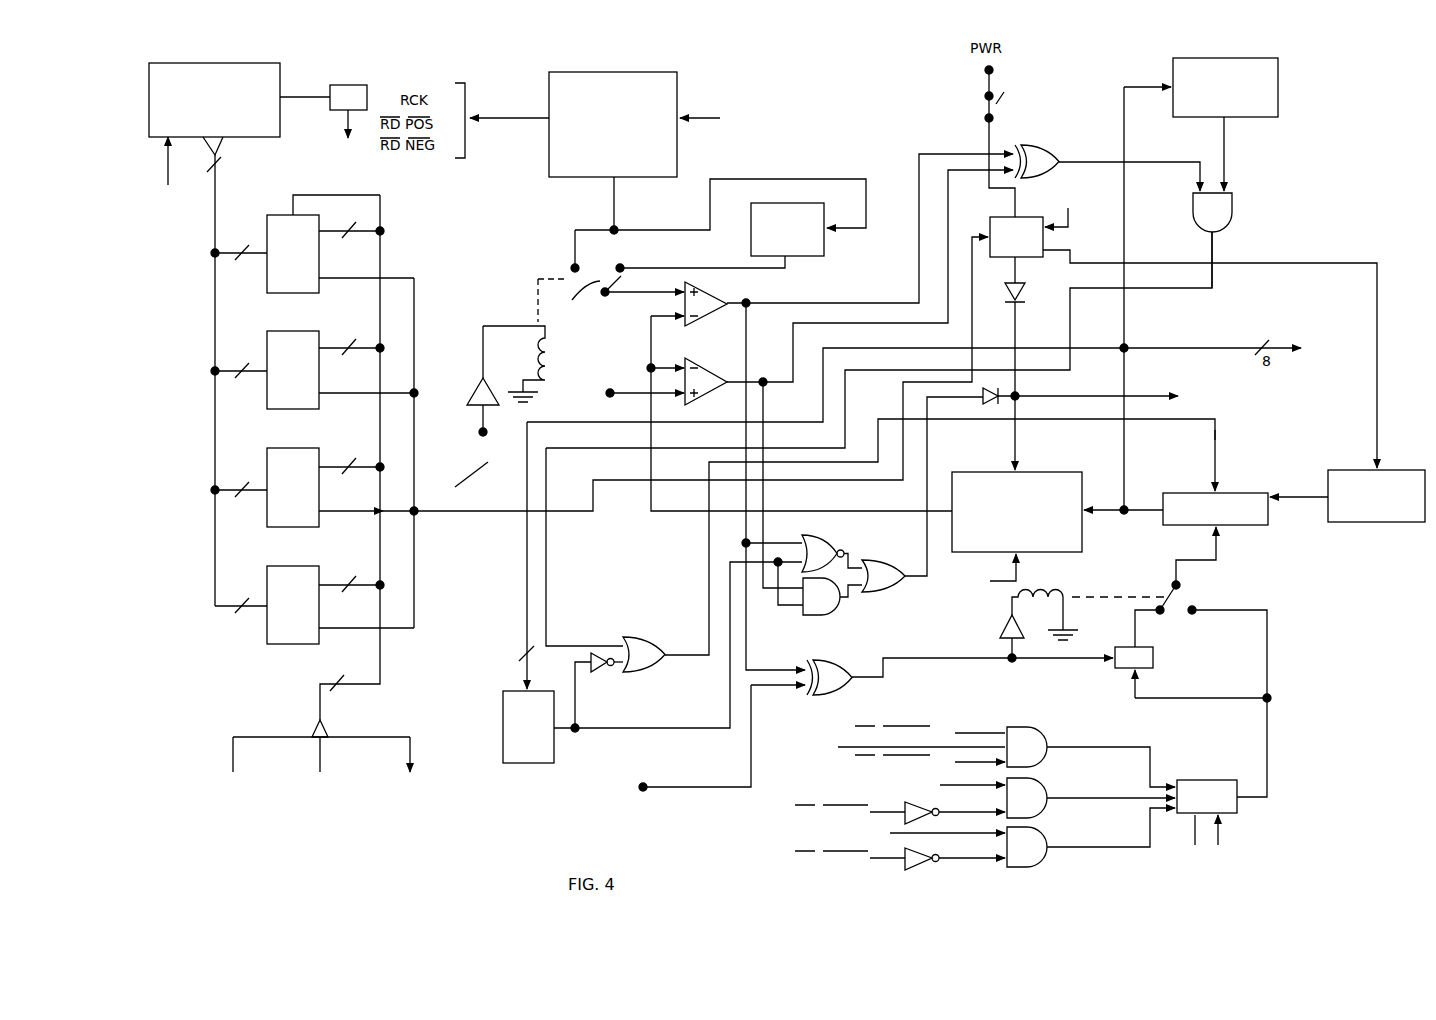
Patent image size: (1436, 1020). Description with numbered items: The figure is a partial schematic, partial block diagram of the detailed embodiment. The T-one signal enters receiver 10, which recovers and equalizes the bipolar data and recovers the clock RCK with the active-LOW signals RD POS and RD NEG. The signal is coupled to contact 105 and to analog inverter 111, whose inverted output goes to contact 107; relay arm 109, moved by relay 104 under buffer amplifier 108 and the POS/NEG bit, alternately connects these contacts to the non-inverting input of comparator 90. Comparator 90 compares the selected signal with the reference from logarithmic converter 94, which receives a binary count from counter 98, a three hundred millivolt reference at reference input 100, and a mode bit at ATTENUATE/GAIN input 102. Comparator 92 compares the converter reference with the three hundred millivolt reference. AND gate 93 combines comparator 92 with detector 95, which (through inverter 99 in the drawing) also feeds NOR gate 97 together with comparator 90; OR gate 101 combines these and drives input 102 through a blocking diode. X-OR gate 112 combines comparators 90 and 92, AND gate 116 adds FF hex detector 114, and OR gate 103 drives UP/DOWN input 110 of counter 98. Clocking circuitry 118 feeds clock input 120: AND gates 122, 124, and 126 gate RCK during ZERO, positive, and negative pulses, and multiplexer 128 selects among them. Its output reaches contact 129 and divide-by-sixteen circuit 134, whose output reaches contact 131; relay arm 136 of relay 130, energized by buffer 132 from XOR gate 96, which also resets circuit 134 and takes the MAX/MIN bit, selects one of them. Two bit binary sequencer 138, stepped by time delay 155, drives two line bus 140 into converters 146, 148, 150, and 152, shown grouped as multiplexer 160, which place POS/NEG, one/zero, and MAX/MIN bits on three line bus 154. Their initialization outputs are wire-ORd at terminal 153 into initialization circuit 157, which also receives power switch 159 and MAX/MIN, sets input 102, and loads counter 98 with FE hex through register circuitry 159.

The receiver 10 is at (549, 97).
The comparator 90 is at (713, 289).
The comparator 92 is at (710, 369).
The AND gate 93 is at (838, 613).
The logarithmic digital-to-analog converter 94 is at (1085, 478).
The 00 hex detector 95 is at (481, 714).
The XOR gate 96 is at (852, 688).
The NOR gate 97 is at (835, 536).
The counter 98 is at (1186, 528).
The inverter 99 is at (600, 668).
The reference input 100 is at (1018, 578).
The OR gate 101 is at (903, 582).
The ATTENUATE/GAIN input 102 is at (1012, 445).
The OR gate 103 is at (658, 665).
The relay 104 is at (531, 340).
The contact 105 is at (574, 266).
The contact 107 is at (623, 265).
The buffer amplifier 108 is at (478, 386).
The relay arm 109 is at (587, 298).
The UP/DOWN input 110 is at (1212, 468).
The analog inverter 111 is at (824, 256).
The X-OR gate 112 is at (1058, 152).
The FF hex detector 114 is at (1278, 117).
The AND gate 116 is at (1240, 203).
The clocking circuitry 118 is at (1123, 779).
The clock input 120 is at (1222, 553).
The AND gate 122 is at (1045, 733).
The AND gate 124 is at (1045, 783).
The AND gate 126 is at (1045, 833).
The multiplexer 128 is at (1218, 778).
The contact 129 is at (1197, 612).
The relay 130 is at (1088, 609).
The contact 131 is at (1162, 615).
The buffer 132 is at (998, 628).
The divide-by-16 circuit 134 is at (1153, 657).
The relay arm 136 is at (1183, 598).
The two bit binary sequencer 138 is at (283, 87).
The two line bus 140 is at (213, 367).
The converter 146 is at (266, 229).
The converter 148 is at (266, 346).
The converter 150 is at (266, 461).
The converter 152 is at (266, 578).
The terminal 153 is at (416, 513).
The three line bus 154 is at (385, 663).
The time delay 155 is at (369, 85).
The initialization circuit 157 is at (989, 216).
The power switch 159 is at (1005, 103).
The multiplexer 160 is at (336, 194).